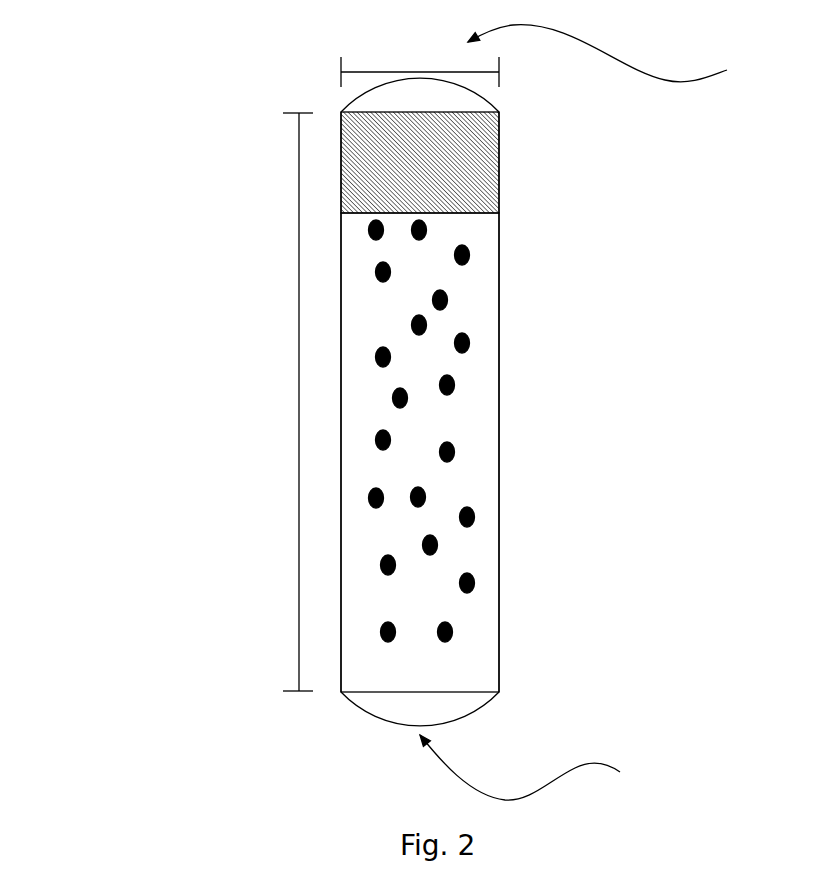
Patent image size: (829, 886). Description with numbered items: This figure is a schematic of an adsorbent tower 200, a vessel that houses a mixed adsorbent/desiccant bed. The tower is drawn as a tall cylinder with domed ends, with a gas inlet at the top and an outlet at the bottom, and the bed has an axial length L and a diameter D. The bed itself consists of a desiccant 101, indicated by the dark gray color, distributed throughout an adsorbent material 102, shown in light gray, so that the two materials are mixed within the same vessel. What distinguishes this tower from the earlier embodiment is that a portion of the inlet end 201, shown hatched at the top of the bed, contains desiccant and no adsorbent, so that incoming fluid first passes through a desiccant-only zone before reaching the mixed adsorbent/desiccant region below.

The adsorbent tower 200 is at (64, 80).
The portion of the inlet end 201 is at (500, 162).
The desiccant 101 is at (461, 253).
The adsorbent material 102 is at (468, 430).